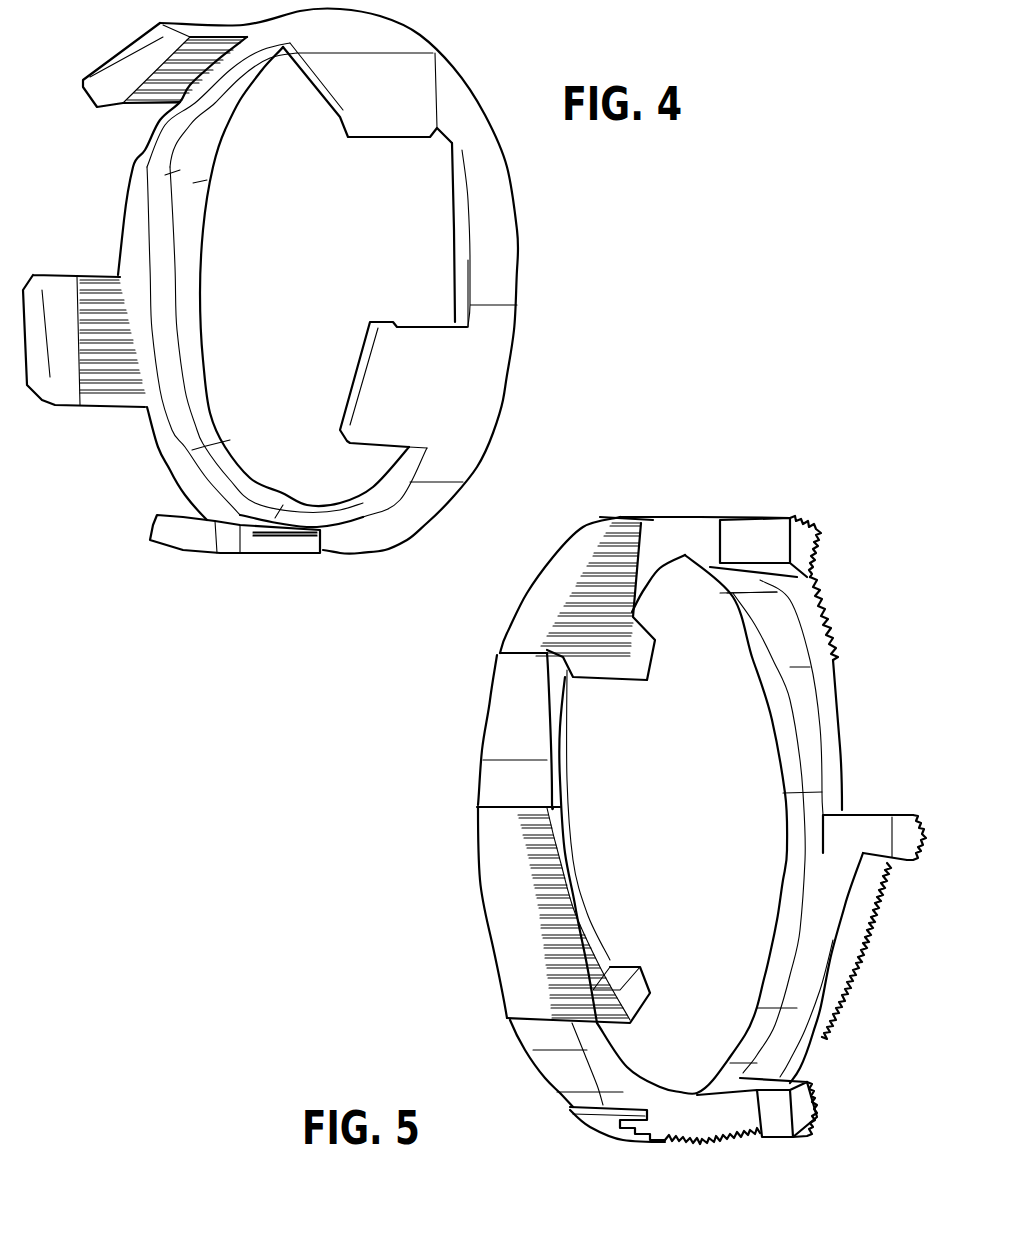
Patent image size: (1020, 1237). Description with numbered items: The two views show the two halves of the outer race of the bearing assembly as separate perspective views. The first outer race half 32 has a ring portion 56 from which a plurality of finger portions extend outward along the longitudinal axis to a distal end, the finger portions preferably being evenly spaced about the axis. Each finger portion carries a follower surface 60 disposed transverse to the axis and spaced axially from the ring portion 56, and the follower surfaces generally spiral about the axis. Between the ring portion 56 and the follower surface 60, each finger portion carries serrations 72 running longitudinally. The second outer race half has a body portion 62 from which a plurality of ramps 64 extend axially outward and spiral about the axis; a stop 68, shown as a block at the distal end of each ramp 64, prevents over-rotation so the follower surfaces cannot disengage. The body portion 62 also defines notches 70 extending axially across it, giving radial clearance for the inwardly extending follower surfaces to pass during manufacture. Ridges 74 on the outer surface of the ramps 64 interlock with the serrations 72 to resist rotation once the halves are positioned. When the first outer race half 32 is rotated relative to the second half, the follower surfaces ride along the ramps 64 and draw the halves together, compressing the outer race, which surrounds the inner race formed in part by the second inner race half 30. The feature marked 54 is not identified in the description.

In FIG. 5, the second inner race half 30 is at (470, 813).
In FIG. 4, the first outer race half 32 is at (432, 80).
In FIG. 4, the tab / notch 54 is at (128, 113).
In FIG. 5, the tab / notch 54 is at (635, 562).
In FIG. 4, the ring portion 56 is at (495, 235).
In FIG. 4, the follower surface 60 is at (380, 138).
In FIG. 5, the body portion 62 is at (533, 617).
In FIG. 5, the ramp 64 is at (577, 907).
In FIG. 5, the stop 68 is at (807, 553).
In FIG. 5, the notch 70 is at (520, 660).
In FIG. 4, the serrations 72 is at (107, 310).
In FIG. 5, the ridges 74 is at (523, 883).